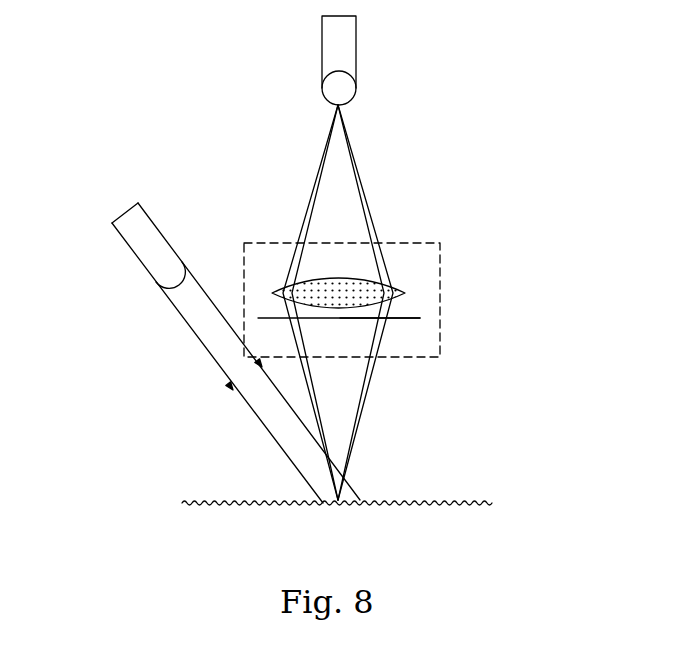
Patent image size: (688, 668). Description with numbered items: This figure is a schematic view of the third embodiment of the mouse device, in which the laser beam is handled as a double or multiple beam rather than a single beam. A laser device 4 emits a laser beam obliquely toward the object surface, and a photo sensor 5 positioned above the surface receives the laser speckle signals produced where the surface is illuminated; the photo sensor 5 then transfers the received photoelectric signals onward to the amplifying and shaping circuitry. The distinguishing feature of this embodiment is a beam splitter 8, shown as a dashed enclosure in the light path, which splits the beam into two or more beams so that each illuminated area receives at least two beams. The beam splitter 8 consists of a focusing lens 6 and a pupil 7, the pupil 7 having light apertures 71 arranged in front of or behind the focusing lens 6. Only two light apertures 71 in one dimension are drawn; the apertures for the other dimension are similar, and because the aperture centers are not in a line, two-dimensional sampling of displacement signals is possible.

The laser device 4 is at (140, 248).
The photo sensor 5 is at (339, 37).
The focusing lens 6 is at (348, 295).
The pupil 7 is at (318, 318).
The light apertures 71 is at (387, 318).
The beam splitter 8 is at (425, 305).